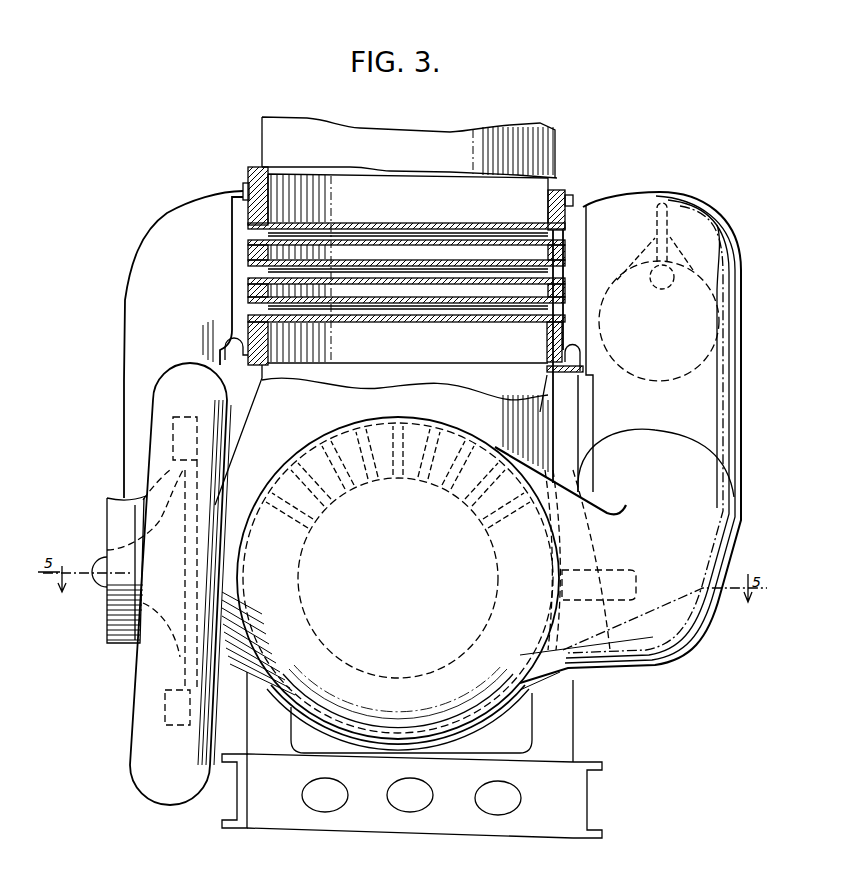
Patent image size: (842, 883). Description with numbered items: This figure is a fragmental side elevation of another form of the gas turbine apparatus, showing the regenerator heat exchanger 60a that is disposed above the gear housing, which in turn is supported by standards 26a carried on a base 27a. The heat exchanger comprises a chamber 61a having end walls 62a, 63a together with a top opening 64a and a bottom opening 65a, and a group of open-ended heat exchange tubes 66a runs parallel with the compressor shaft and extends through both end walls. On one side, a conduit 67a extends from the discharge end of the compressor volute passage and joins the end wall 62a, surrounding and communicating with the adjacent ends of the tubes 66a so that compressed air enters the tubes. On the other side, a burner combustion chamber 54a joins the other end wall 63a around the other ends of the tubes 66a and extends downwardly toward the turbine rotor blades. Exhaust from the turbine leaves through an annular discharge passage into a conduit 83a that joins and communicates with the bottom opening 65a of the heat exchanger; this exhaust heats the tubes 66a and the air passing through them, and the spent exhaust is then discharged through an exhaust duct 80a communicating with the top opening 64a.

The exhaust duct 80a is at (356, 140).
The regenerator heat exchanger 60a is at (408, 231).
The end wall 62a is at (268, 190).
The end wall 63a is at (546, 206).
The top opening 64a is at (417, 197).
The heat exchange tubes 66a is at (373, 237).
The chamber 61a is at (398, 335).
The bottom opening 65a is at (443, 363).
The conduit 83a is at (549, 411).
The conduit 67a is at (153, 238).
The burner combustion chamber 54a is at (736, 403).
The standards 26a is at (270, 740).
The base 27a is at (566, 806).